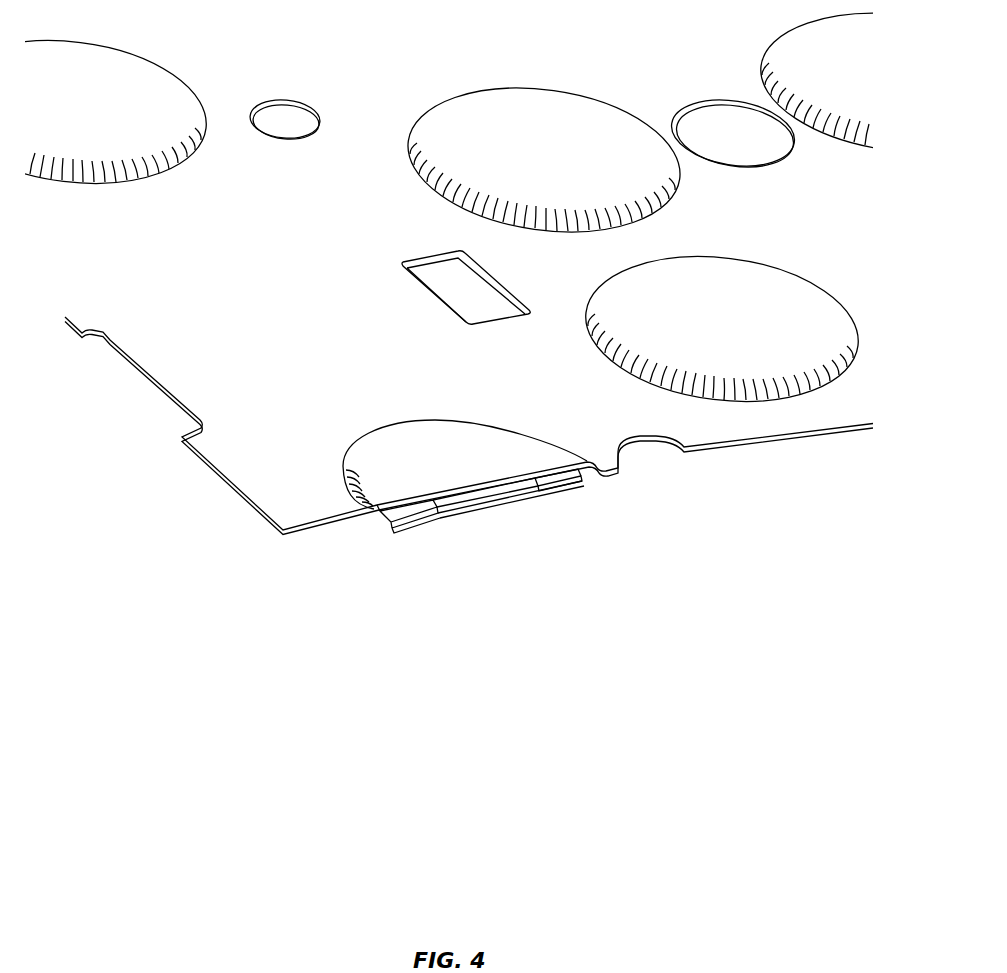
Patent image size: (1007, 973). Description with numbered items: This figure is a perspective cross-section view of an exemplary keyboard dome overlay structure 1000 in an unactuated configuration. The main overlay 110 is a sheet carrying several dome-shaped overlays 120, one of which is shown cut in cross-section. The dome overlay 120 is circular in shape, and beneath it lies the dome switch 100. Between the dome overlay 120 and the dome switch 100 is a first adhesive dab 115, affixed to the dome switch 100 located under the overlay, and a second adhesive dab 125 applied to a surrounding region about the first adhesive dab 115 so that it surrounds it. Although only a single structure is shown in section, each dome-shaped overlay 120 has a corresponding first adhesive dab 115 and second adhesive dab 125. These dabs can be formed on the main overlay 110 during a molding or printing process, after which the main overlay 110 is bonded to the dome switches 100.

The dome switch assembly 1000 is at (656, 33).
The dome overlay 120 is at (518, 115).
The main overlay 110 is at (172, 357).
The second adhesive dab 125 is at (408, 502).
The first adhesive dab 115 is at (483, 492).
The dome switch 100 is at (418, 517).